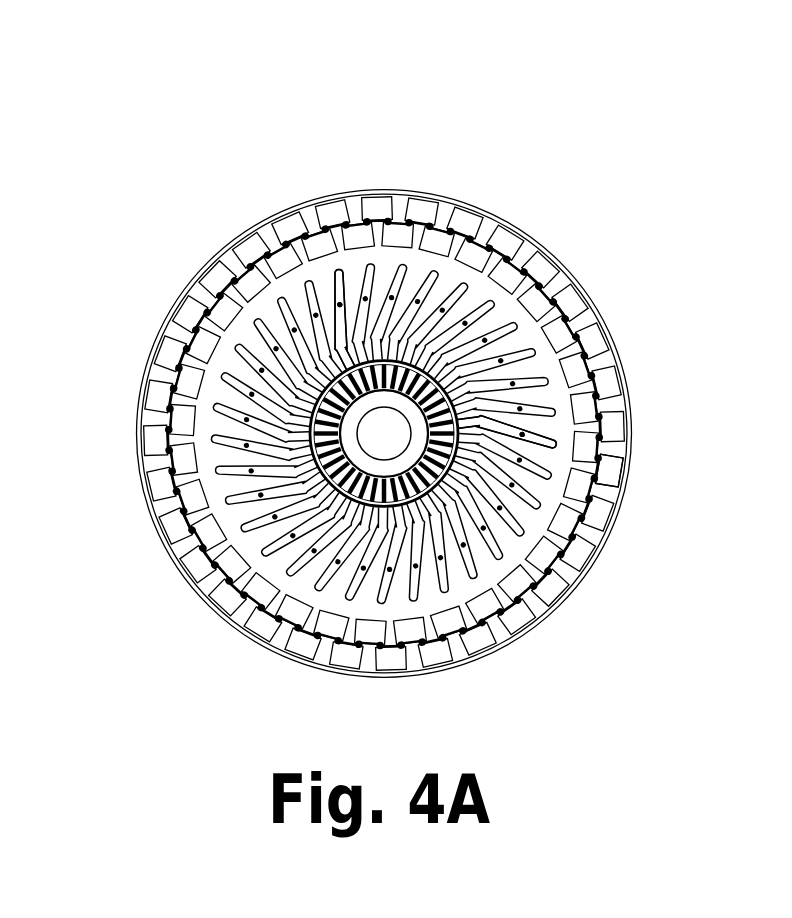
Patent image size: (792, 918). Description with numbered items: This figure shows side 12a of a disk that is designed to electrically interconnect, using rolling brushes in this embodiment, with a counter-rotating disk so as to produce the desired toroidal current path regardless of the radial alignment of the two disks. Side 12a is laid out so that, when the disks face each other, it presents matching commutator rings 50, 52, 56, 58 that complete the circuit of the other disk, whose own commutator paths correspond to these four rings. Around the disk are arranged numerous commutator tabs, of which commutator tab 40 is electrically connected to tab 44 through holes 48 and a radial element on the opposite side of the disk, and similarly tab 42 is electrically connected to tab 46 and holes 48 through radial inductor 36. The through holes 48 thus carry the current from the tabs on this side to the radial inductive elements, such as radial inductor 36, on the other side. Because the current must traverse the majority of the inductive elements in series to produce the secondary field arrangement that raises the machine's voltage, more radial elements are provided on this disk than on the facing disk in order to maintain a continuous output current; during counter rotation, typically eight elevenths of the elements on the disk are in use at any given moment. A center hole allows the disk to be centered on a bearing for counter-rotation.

The side of disk 12a is at (523, 633).
The radial inductor 36 is at (393, 277).
The commutator tab 40 is at (222, 258).
The commutator tab 42 is at (318, 375).
The commutator tab 44 is at (338, 351).
The commutator tab 46 is at (332, 215).
The through holes 48 is at (447, 232).
The commutator ring 50 is at (450, 395).
The commutator ring 52 is at (472, 418).
The commutator ring 56 is at (587, 397).
The commutator ring 58 is at (613, 460).